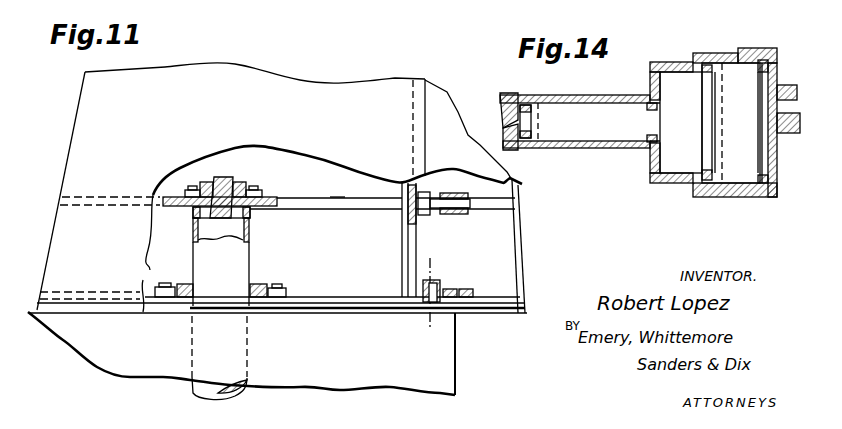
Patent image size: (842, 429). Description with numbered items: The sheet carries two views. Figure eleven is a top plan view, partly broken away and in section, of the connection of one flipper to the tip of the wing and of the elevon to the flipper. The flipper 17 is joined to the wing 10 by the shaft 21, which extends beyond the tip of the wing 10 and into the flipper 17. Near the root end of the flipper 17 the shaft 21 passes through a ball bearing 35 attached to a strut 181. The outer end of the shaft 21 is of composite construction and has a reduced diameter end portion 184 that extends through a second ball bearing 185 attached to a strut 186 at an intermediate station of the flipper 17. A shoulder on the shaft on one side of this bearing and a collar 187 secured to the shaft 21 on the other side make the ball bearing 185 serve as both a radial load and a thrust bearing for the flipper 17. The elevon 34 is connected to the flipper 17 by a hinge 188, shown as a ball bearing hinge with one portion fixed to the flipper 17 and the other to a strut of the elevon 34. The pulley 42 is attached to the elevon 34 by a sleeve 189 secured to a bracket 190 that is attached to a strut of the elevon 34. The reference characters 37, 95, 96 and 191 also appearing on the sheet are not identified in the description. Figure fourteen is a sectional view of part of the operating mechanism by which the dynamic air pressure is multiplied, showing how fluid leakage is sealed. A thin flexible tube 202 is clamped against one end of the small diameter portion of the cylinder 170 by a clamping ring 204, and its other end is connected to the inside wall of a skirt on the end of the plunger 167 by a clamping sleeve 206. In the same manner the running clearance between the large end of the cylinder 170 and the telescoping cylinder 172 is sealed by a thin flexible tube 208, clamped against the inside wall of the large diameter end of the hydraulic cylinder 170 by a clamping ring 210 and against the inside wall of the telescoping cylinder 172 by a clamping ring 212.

In FIG. 11, the wing 10 is at (445, 368).
In FIG. 11, the flipper 17 is at (305, 86).
In FIG. 11, the shaft 21 is at (238, 254).
In FIG. 11, the elevon 34 is at (513, 184).
In FIG. 11, the ball bearing 35 is at (255, 290).
In FIG. 11, the center line 37 is at (432, 265).
In FIG. 11, the pulley 42 is at (438, 305).
In FIG. 11, the strut 181 is at (323, 300).
In FIG. 11, the reduced diameter end portion 184 is at (226, 180).
In FIG. 11, the ball bearing 185 is at (241, 183).
In FIG. 11, the strut 186 is at (336, 193).
In FIG. 11, the collar 187 is at (214, 178).
In FIG. 11, the hinge 188 is at (436, 222).
In FIG. 11, the sleeve 189 is at (434, 279).
In FIG. 11, the bracket 190 is at (474, 297).
In FIG. 14, the member 95 is at (649, 0).
In FIG. 14, the member 96 is at (704, 0).
In FIG. 14, the member 191 is at (623, 0).
In FIG. 14, the plunger 167 is at (517, 150).
In FIG. 14, the cylinder 170 is at (660, 123).
In FIG. 14, the telescoping cylinder 172 is at (712, 190).
In FIG. 14, the flexible tube 202 is at (592, 135).
In FIG. 14, the clamping ring 204 is at (657, 112).
In FIG. 14, the clamping sleeve 206 is at (540, 128).
In FIG. 14, the flexible tube 208 is at (744, 67).
In FIG. 14, the clamping ring 210 is at (710, 170).
In FIG. 14, the clamping ring 212 is at (775, 72).